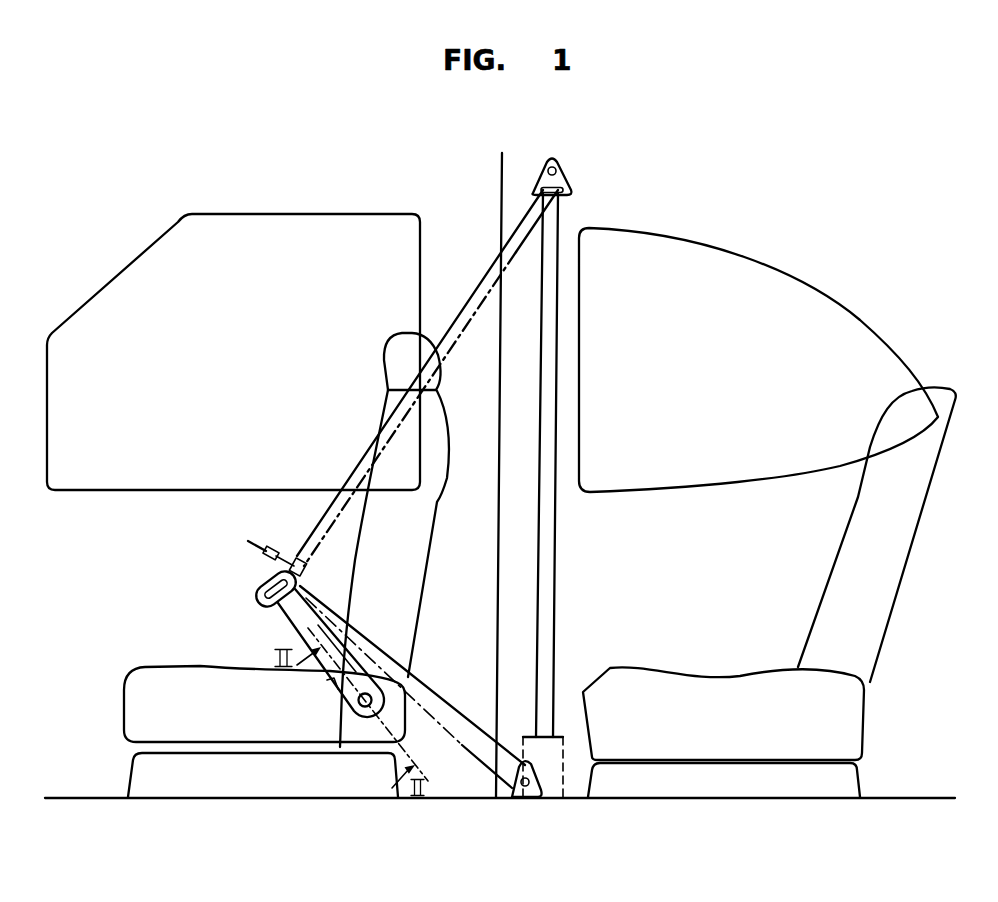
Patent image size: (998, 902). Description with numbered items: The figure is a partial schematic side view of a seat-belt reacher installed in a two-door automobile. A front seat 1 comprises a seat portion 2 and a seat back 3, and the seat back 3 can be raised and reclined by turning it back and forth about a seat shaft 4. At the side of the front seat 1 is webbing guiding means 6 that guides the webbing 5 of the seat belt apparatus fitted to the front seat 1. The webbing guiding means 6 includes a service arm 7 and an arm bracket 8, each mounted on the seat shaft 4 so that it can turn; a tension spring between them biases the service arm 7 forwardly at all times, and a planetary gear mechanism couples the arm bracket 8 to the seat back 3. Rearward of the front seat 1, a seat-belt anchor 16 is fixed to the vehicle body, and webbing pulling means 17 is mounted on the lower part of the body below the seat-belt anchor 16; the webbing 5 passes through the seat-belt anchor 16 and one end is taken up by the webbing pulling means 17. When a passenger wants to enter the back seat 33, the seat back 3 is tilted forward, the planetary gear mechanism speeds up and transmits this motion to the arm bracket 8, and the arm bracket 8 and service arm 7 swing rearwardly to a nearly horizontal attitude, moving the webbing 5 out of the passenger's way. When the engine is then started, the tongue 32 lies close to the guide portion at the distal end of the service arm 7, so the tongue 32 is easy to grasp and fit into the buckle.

The front seat 1 is at (264, 565).
The seat portion 2 is at (150, 695).
The seat back 3 is at (410, 563).
The seat shaft 4 is at (363, 708).
The webbing 5 is at (553, 628).
The webbing guiding means 6 is at (287, 717).
The service arm 7 is at (318, 636).
The arm bracket 8 is at (347, 700).
The seat-belt anchor 16 is at (568, 183).
The webbing pulling means 17 is at (548, 778).
The tongue 32 is at (253, 543).
The back seat 33 is at (768, 635).